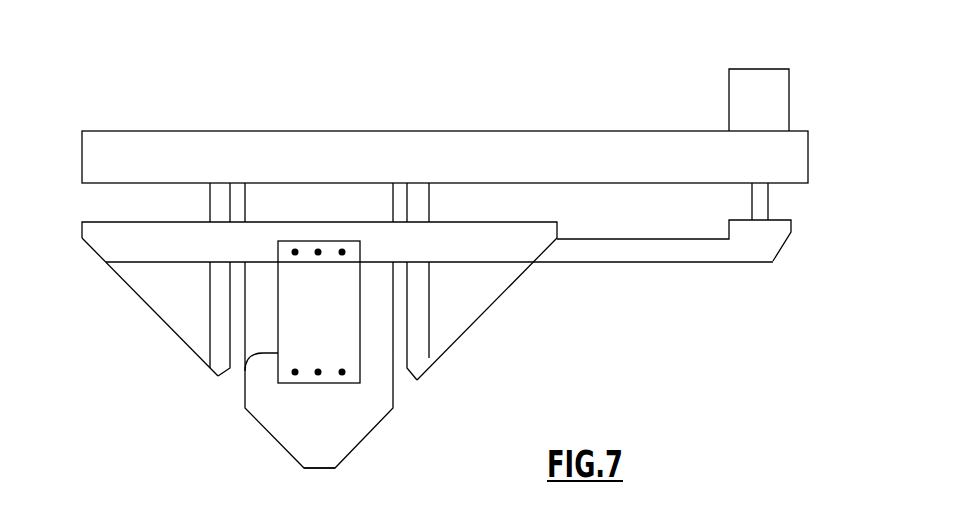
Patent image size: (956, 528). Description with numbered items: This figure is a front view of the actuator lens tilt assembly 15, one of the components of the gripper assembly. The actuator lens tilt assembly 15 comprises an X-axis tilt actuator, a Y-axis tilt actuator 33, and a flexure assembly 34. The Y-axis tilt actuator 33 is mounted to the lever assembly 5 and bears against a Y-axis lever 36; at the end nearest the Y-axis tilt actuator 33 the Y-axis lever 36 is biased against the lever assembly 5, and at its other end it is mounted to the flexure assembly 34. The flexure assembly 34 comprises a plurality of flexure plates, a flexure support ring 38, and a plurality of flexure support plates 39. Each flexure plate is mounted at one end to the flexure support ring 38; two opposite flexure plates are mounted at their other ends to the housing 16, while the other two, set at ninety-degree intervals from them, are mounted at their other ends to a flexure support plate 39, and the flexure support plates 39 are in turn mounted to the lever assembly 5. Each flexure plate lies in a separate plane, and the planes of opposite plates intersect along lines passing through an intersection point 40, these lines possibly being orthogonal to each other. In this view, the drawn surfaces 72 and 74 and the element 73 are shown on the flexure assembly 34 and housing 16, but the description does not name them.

The lever assembly 5 is at (608, 131).
The Y-axis tilt actuator 33 is at (768, 202).
The flexure support ring 38 is at (91, 222).
The Y-axis lever 36 is at (658, 262).
The inclined surface 72 is at (122, 282).
The inclined surface 74 is at (510, 287).
The flexure assembly 34 is at (113, 328).
The flexure support plates 39 is at (210, 328).
The housing 16 is at (268, 435).
The insert 73 is at (245, 387).
The intersection point 40 is at (318, 470).
The actuator lens tilt assembly 15 is at (552, 363).